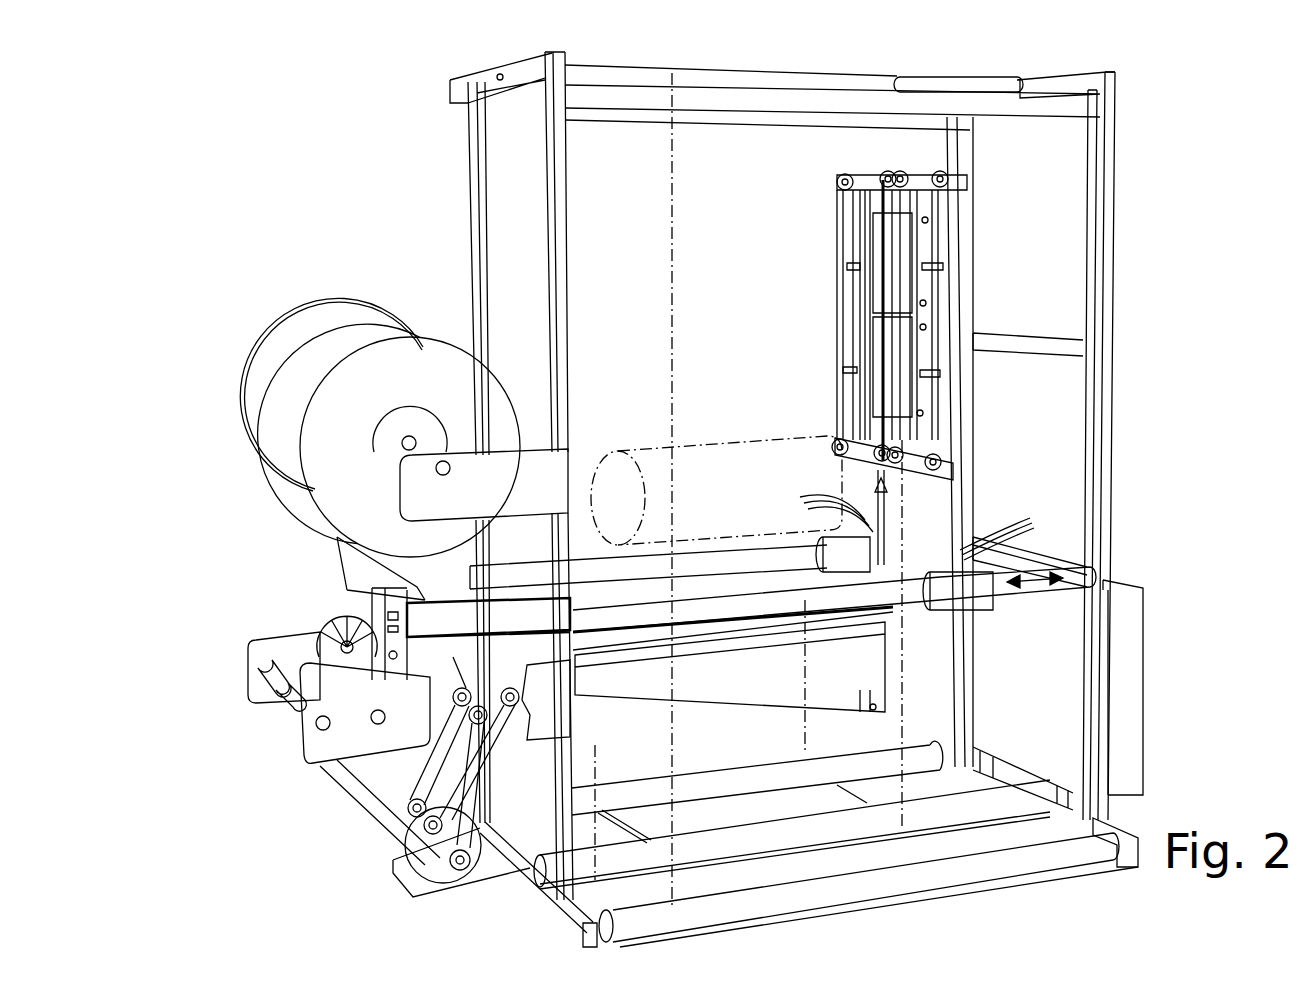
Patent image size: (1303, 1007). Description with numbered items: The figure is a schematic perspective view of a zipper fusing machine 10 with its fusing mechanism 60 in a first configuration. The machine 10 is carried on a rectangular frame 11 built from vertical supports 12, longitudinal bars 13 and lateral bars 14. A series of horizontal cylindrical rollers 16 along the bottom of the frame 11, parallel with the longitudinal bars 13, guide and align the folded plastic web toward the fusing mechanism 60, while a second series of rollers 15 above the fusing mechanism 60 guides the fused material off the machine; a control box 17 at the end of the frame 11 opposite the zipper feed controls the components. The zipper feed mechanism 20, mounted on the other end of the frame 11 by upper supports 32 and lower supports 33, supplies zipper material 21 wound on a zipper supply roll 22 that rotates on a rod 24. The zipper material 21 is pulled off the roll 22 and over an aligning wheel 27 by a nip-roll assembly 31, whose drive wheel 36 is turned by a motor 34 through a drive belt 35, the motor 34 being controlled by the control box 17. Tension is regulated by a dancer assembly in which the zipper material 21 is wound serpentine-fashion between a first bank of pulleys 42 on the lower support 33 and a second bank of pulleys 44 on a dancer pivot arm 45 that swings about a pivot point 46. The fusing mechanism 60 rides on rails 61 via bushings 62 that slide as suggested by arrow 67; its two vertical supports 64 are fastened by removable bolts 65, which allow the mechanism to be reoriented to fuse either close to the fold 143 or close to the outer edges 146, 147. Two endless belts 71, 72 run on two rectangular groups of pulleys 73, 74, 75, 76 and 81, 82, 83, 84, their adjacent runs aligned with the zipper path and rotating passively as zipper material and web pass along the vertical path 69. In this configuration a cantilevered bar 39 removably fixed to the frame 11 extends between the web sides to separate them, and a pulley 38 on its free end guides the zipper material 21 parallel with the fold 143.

The zipper fusing machine 10 is at (386, 118).
The rectangular frame 11 is at (733, 499).
The vertical supports 12 is at (545, 195).
The longitudinal bars 13 is at (497, 105).
The lateral bars 14 is at (470, 90).
The rollers 15 is at (1000, 82).
The horizontal cylindrical rollers 16 is at (910, 767).
The control box 17 is at (1125, 690).
The zipper feed mechanism 20 is at (377, 730).
The zipper material 21 is at (300, 620).
The zipper supply roll 22 is at (318, 338).
The rod 24 is at (420, 440).
The aligning wheel 27 is at (250, 650).
The nip-roll assembly 31 is at (397, 650).
The upper supports 32 is at (470, 570).
The lower supports 33 is at (265, 640).
The motor 34 is at (415, 878).
The drive belt 35 is at (475, 860).
The nip-roll assembly drive wheel 36 is at (300, 595).
The pulley 38 is at (860, 712).
The cantilevered bar 39 is at (808, 625).
The first bank of pulleys 42 is at (500, 680).
The second bank of pulleys 44 is at (425, 820).
The dancer pivot arm 45 is at (358, 760).
The pivot point 46 is at (325, 730).
The fusing mechanism 60 is at (894, 351).
The rails 61 is at (775, 545).
The bushings 62 is at (835, 550).
The vertical supports 64 is at (950, 485).
The bolts 65 is at (842, 520).
The arrow 67 is at (1040, 590).
The vertical path 69 is at (870, 500).
The endless belt 71 is at (955, 248).
The second endless belt 72 is at (837, 335).
The pulley 73 is at (905, 178).
The pulley 74 is at (965, 185).
The pulley 75 is at (945, 465).
The pulley 76 is at (905, 455).
The pulley 81 is at (886, 178).
The pulley 82 is at (883, 455).
The pulley 83 is at (838, 445).
The pulley 84 is at (840, 183).
The fold 143 is at (905, 715).
The outer edge 146 is at (668, 745).
The outer edge 147 is at (700, 742).